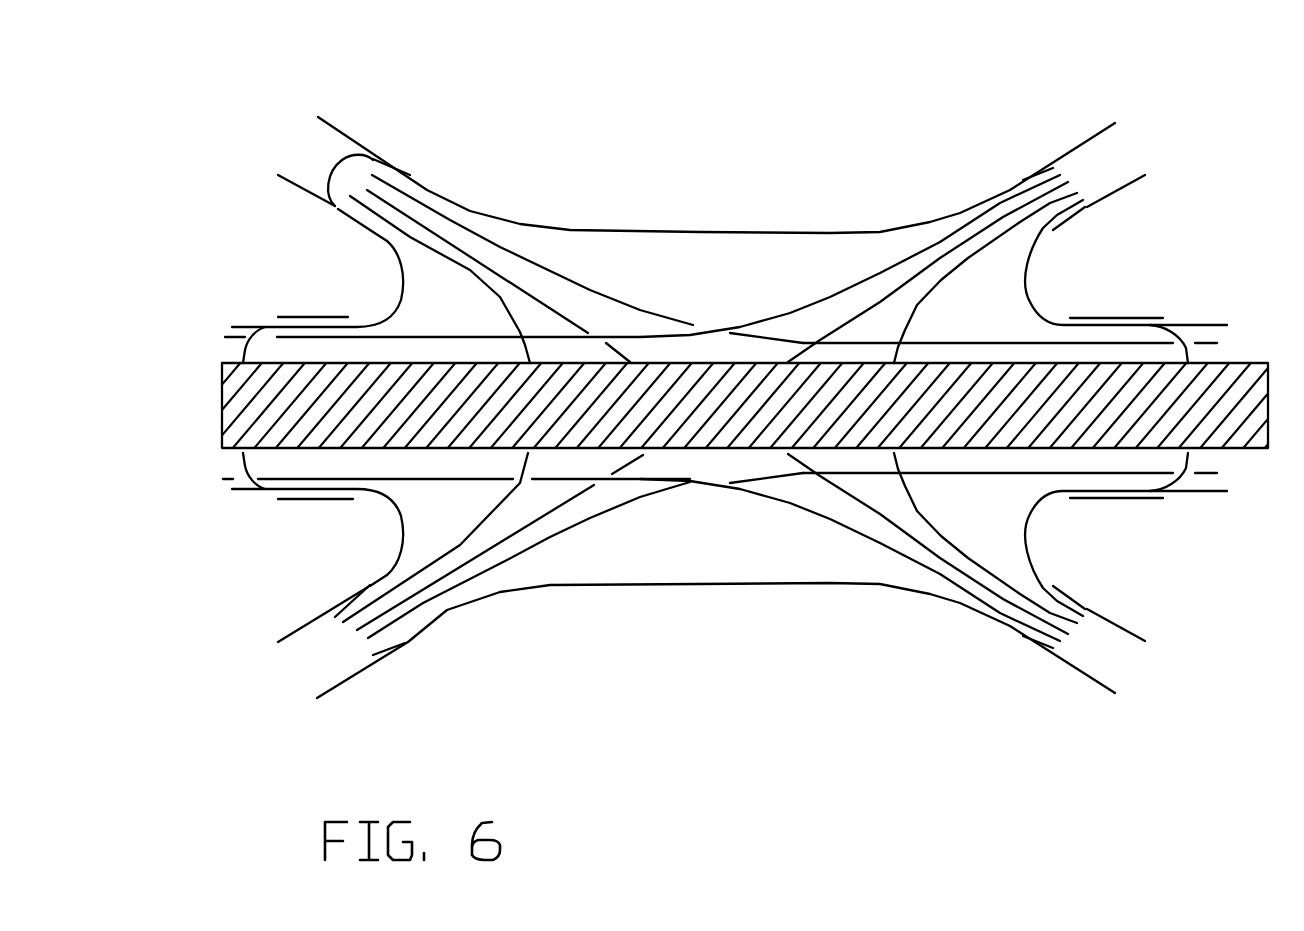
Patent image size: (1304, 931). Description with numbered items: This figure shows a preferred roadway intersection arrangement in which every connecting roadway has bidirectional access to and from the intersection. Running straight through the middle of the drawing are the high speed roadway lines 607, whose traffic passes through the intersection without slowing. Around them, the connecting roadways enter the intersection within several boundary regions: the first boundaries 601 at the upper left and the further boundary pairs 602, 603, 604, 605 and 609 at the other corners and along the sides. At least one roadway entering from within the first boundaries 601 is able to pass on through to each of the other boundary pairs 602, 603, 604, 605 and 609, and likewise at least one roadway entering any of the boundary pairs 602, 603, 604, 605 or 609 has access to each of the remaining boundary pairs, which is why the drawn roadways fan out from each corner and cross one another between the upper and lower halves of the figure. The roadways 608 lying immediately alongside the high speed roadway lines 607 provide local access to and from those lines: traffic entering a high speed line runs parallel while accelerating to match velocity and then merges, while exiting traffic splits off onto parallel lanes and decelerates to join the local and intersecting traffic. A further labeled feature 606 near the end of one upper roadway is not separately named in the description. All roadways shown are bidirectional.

The first boundaries 601 is at (367, 142).
The boundary pair 602 is at (1072, 147).
The boundary pair 603 is at (1125, 314).
The boundary pair 604 is at (1098, 608).
The boundary pair 605 is at (307, 620).
The folded end portion 606 is at (342, 178).
The high speed roadway lines 607 is at (1242, 363).
The roadways 608 is at (252, 318).
The boundary pair 609 is at (288, 313).